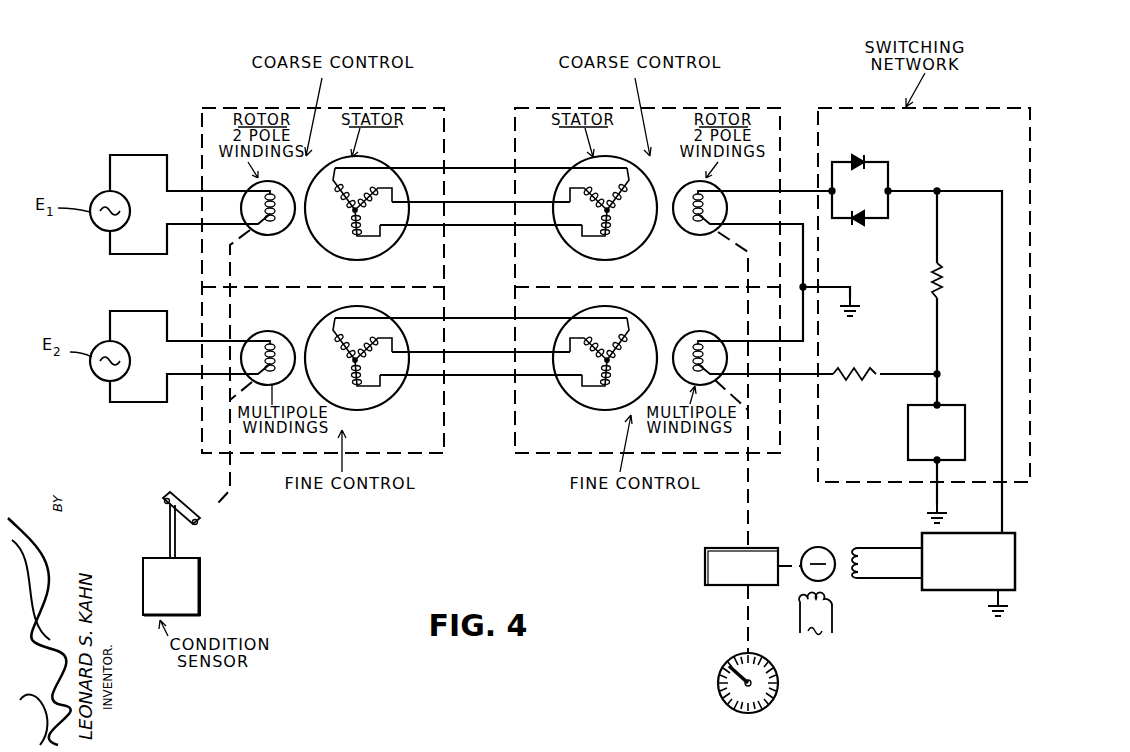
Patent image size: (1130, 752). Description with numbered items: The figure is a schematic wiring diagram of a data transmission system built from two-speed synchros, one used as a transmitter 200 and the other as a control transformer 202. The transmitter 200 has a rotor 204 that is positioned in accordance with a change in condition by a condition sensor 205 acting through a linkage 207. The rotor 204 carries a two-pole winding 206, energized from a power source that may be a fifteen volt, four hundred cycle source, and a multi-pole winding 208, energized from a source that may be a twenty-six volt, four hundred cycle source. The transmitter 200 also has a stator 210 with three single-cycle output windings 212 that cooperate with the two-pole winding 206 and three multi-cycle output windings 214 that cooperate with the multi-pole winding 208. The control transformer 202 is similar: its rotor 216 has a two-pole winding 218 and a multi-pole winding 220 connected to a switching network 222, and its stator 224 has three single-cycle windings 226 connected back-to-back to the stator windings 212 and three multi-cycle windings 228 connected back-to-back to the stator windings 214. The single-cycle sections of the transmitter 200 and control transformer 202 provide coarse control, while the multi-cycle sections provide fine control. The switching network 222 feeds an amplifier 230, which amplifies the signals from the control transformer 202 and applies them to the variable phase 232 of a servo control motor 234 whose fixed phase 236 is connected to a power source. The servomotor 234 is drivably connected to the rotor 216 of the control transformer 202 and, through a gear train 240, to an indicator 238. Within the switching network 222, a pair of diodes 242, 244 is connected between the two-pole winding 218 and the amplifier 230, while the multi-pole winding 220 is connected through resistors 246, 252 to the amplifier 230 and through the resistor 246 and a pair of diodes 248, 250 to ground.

The transmitter 200 is at (418, 107).
The control transformer 202 is at (717, 107).
The rotor 204 is at (288, 226).
The condition sensor 205 is at (203, 588).
The two-pole winding 206 is at (280, 212).
The linkage 207 is at (220, 507).
The multi-pole winding 208 is at (266, 333).
The stator 210 is at (382, 160).
The single-cycle output windings 212 is at (352, 214).
The multi-cycle output windings 214 is at (350, 362).
The rotor 216 is at (700, 236).
The two-pole winding 218 is at (708, 213).
The multi-pole winding 220 is at (712, 358).
The switching network 222 is at (1033, 190).
The stator 224 is at (647, 240).
The single-cycle windings 226 is at (609, 202).
The multi-cycle windings 228 is at (609, 352).
The amplifier 230 is at (1018, 565).
The variable phase 232 is at (856, 557).
The servo control motor 234 is at (800, 587).
The fixed phase 236 is at (832, 610).
The indicator 238 is at (780, 690).
The gear train 240 is at (705, 570).
The diode 242 is at (869, 154).
The diode 244 is at (858, 226).
The resistor 246 is at (858, 364).
The diode 248 is at (900, 435).
The diode 250 is at (967, 425).
The resistor 252 is at (942, 276).